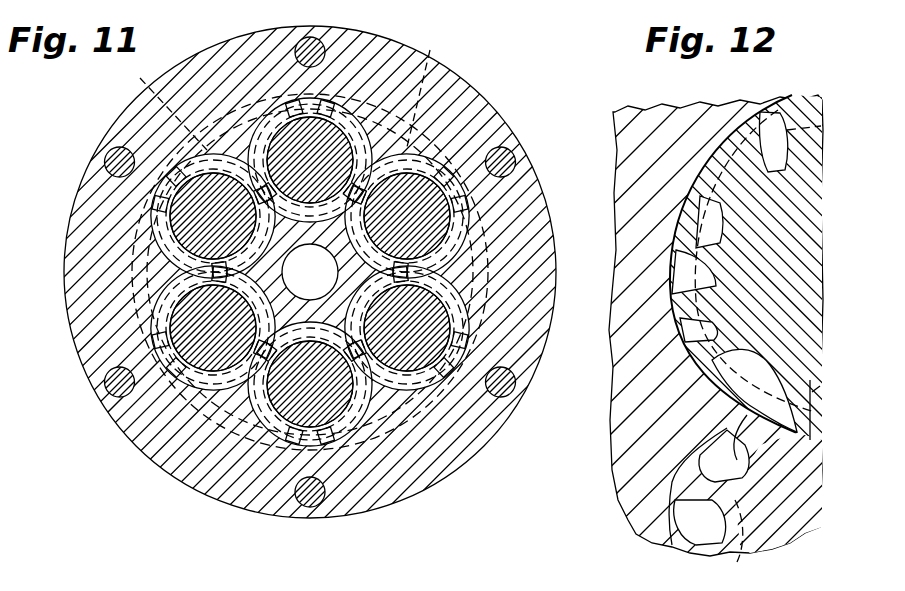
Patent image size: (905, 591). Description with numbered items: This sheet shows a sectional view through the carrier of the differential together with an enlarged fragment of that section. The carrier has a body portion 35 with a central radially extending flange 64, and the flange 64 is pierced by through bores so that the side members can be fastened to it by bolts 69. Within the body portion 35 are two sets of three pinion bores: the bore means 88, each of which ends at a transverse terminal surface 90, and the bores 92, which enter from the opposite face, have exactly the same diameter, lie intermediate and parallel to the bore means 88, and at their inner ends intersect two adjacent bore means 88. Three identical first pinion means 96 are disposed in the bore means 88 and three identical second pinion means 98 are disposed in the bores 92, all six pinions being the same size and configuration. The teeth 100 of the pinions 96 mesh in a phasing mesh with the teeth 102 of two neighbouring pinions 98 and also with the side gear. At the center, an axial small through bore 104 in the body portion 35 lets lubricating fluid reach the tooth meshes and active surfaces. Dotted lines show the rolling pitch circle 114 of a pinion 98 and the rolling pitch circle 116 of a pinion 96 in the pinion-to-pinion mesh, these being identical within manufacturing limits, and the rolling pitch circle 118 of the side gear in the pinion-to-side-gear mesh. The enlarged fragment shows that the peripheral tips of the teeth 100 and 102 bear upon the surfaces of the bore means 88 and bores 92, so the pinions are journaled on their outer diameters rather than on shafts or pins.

In FIG. 11, the body portion 35 is at (418, 441).
In FIG. 12, the body portion 35 is at (634, 146).
In FIG. 11, the central radially extending flange 64 is at (491, 103).
In FIG. 11, the bolts 69 is at (505, 380).
In FIG. 12, the bore means 88 is at (700, 463).
In FIG. 12, the terminal surface 90 is at (680, 549).
In FIG. 12, the bores 92 is at (672, 310).
In FIG. 11, the first pinion means 96 is at (427, 210).
In FIG. 12, the first pinion means 96 is at (777, 528).
In FIG. 11, the second pinion means 98 is at (293, 140).
In FIG. 12, the second pinion means 98 is at (712, 158).
In FIG. 12, the teeth 100 is at (693, 517).
In FIG. 12, the teeth 102 is at (700, 270).
In FIG. 11, the axial small through bore 104 is at (337, 277).
In FIG. 11, the rolling pitch circle 114 is at (431, 52).
In FIG. 12, the rolling pitch circle 114 is at (763, 157).
In FIG. 11, the rolling pitch circle 116 is at (140, 78).
In FIG. 12, the rolling pitch circle 116 is at (738, 556).
In FIG. 11, the rolling pitch circle 118 is at (235, 400).